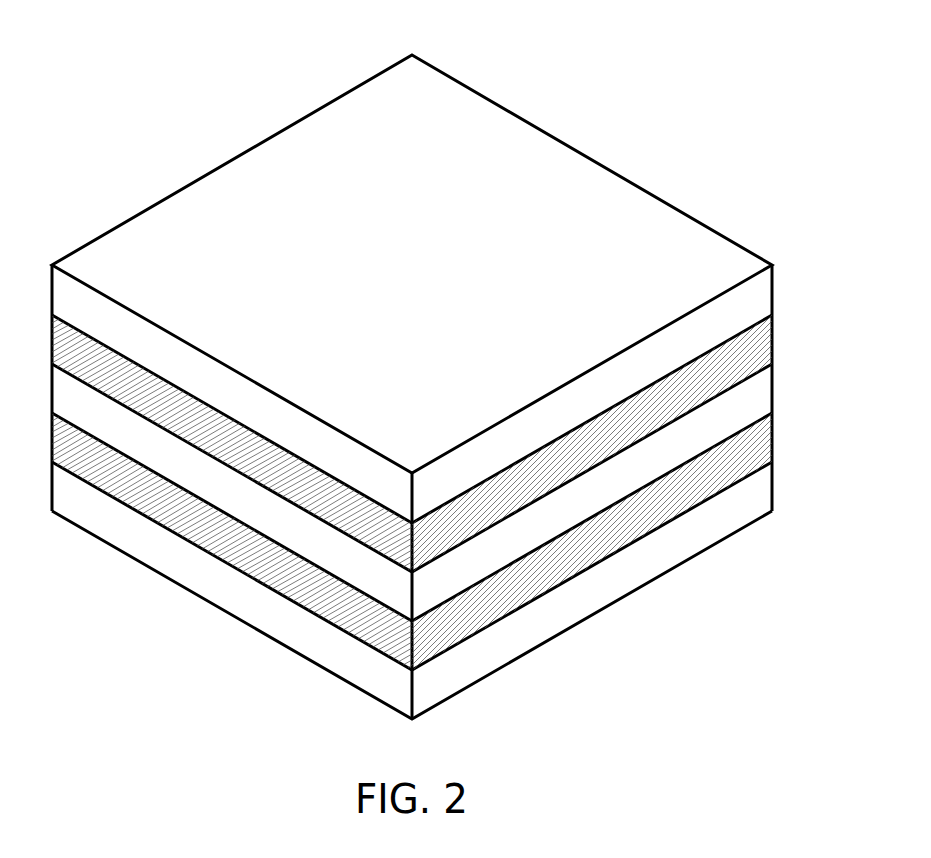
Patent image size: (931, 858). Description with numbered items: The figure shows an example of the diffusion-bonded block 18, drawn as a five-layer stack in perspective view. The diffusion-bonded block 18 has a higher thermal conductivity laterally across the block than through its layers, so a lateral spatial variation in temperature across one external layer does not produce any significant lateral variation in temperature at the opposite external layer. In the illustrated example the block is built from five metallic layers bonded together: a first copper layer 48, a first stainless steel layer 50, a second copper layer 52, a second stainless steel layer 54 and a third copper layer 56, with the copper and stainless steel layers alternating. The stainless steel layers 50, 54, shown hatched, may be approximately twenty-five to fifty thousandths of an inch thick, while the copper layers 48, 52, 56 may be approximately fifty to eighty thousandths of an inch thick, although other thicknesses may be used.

The diffusion-bonded block 18 is at (675, 110).
The first copper layer 48 is at (752, 499).
The first stainless steel layer 50 is at (752, 451).
The second copper layer 52 is at (752, 402).
The second stainless steel layer 54 is at (752, 352).
The third copper layer 56 is at (752, 302).